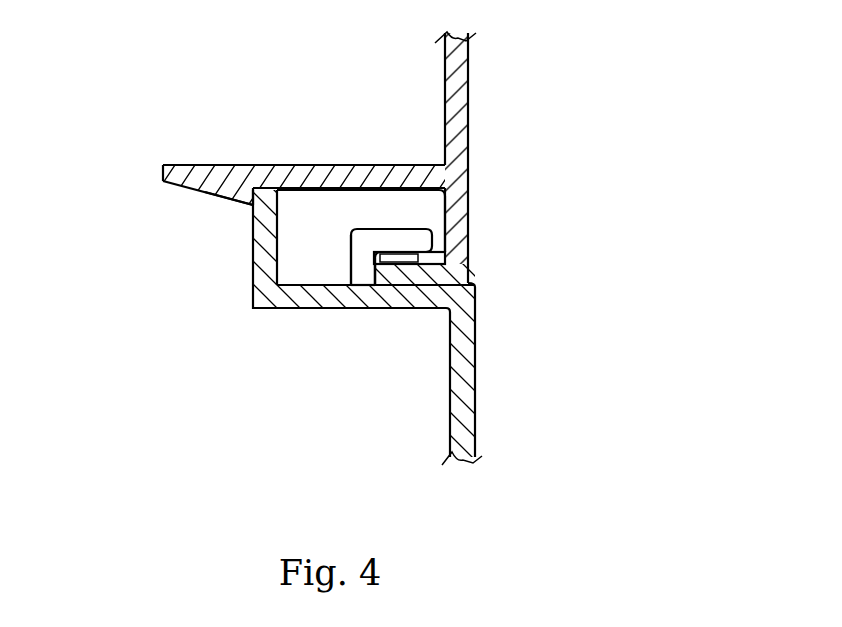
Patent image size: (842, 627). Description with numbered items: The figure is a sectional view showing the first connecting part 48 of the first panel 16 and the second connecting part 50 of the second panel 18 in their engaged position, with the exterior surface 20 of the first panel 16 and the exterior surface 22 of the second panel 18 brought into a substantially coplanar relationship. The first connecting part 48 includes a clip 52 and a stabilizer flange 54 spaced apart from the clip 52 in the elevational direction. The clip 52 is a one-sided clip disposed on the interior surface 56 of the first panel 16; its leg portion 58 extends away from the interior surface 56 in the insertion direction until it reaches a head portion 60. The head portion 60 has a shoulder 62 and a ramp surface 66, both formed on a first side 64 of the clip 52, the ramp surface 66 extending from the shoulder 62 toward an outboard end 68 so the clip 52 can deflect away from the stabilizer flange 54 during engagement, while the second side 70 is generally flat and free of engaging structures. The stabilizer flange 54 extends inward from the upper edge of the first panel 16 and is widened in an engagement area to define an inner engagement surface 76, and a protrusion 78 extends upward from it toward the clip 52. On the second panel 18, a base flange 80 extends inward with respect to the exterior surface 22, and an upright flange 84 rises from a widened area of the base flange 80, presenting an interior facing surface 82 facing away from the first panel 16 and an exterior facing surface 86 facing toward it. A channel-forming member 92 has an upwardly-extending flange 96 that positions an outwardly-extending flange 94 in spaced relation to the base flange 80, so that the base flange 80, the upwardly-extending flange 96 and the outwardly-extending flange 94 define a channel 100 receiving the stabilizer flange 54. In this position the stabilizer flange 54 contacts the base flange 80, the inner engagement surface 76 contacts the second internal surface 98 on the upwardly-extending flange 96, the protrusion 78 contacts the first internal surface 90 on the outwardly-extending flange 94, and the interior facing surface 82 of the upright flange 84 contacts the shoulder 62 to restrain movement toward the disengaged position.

The first panel 16 is at (510, 88).
The second panel 18 is at (428, 452).
The exterior surface of the first panel 20 is at (468, 148).
The exterior surface of the second panel 22 is at (475, 394).
The first connecting part 48 is at (500, 200).
The second connecting part 50 is at (300, 340).
The clip 52 is at (121, 176).
The stabilizer flange 54 is at (413, 272).
The interior surface of the first panel 56 is at (443, 72).
The leg portion 58 is at (340, 142).
The head portion 60 is at (168, 188).
The shoulder 62 is at (240, 190).
The first side of the clip 64 is at (165, 215).
The ramp surface 66 is at (213, 200).
The outboard end of the clip 68 is at (163, 170).
The second side of the clip 70 is at (210, 150).
The inner engagement surface 76 is at (415, 278).
The protrusion 78 is at (418, 258).
The base flange 80 is at (366, 308).
The interior facing surface 82 is at (255, 243).
The upright flange 84 is at (262, 283).
The exterior facing surface 86 is at (277, 215).
The first internal surface 90 is at (398, 248).
The channel-forming member 92 is at (351, 240).
The outwardly-extending flange 94 is at (388, 228).
The upwardly-extending flange 96 is at (374, 250).
The second internal surface 98 is at (374, 266).
The channel 100 is at (438, 245).